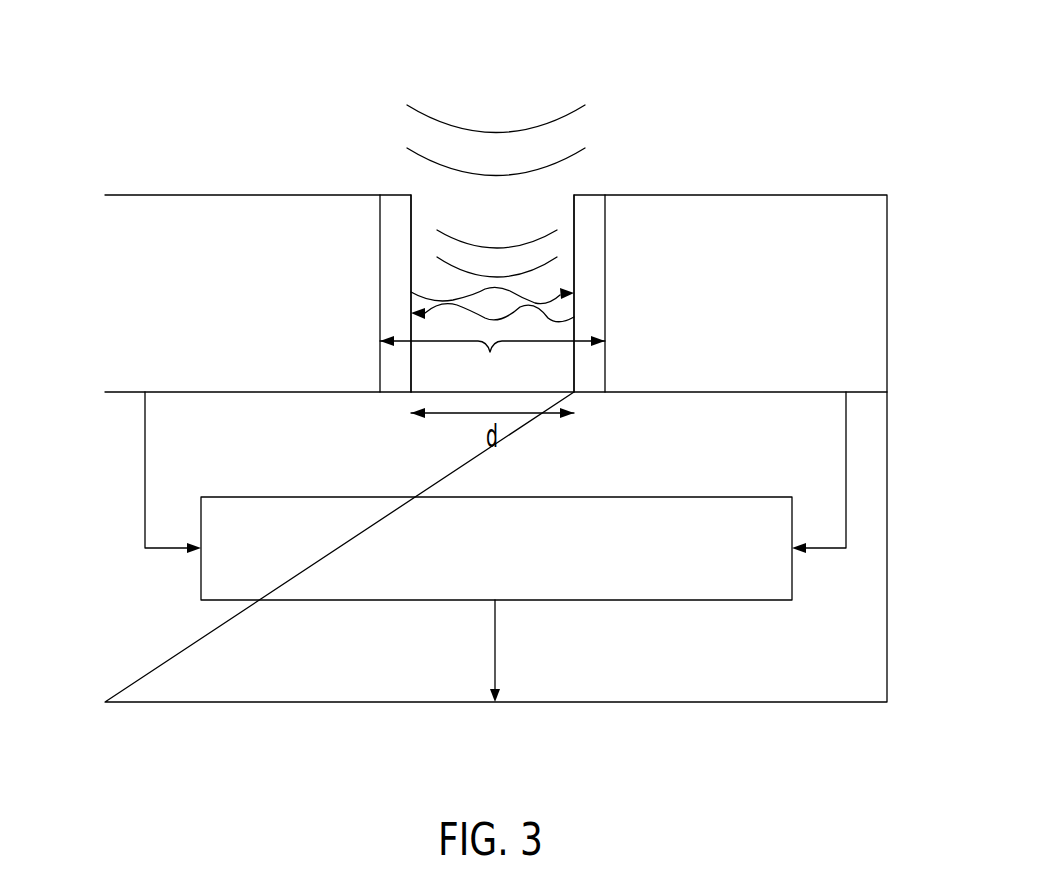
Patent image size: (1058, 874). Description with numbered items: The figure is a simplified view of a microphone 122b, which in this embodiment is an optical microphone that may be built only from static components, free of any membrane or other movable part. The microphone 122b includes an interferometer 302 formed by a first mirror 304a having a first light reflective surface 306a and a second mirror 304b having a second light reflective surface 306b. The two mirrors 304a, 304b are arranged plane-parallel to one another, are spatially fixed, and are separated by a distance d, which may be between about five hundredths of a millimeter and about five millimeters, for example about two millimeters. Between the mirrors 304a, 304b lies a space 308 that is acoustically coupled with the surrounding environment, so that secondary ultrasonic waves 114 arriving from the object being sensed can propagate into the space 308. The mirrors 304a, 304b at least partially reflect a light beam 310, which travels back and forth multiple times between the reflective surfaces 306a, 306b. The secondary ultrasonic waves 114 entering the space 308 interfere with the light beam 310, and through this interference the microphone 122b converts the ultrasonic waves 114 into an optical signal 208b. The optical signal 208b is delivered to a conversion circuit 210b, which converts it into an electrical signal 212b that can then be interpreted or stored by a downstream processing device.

The secondary ultrasonic waves 114 is at (501, 96).
The microphone 122b is at (886, 108).
The first mirror 304a is at (592, 213).
The second mirror 304b is at (388, 213).
The first light reflective surface 306a is at (566, 210).
The second light reflective surface 306b is at (416, 233).
The space 308 is at (574, 258).
The light beam 310 is at (427, 289).
The interferometer 302 is at (492, 365).
The optical signal 208b is at (146, 472).
The conversion circuit 210b is at (693, 570).
The electrical signal 212b is at (497, 642).